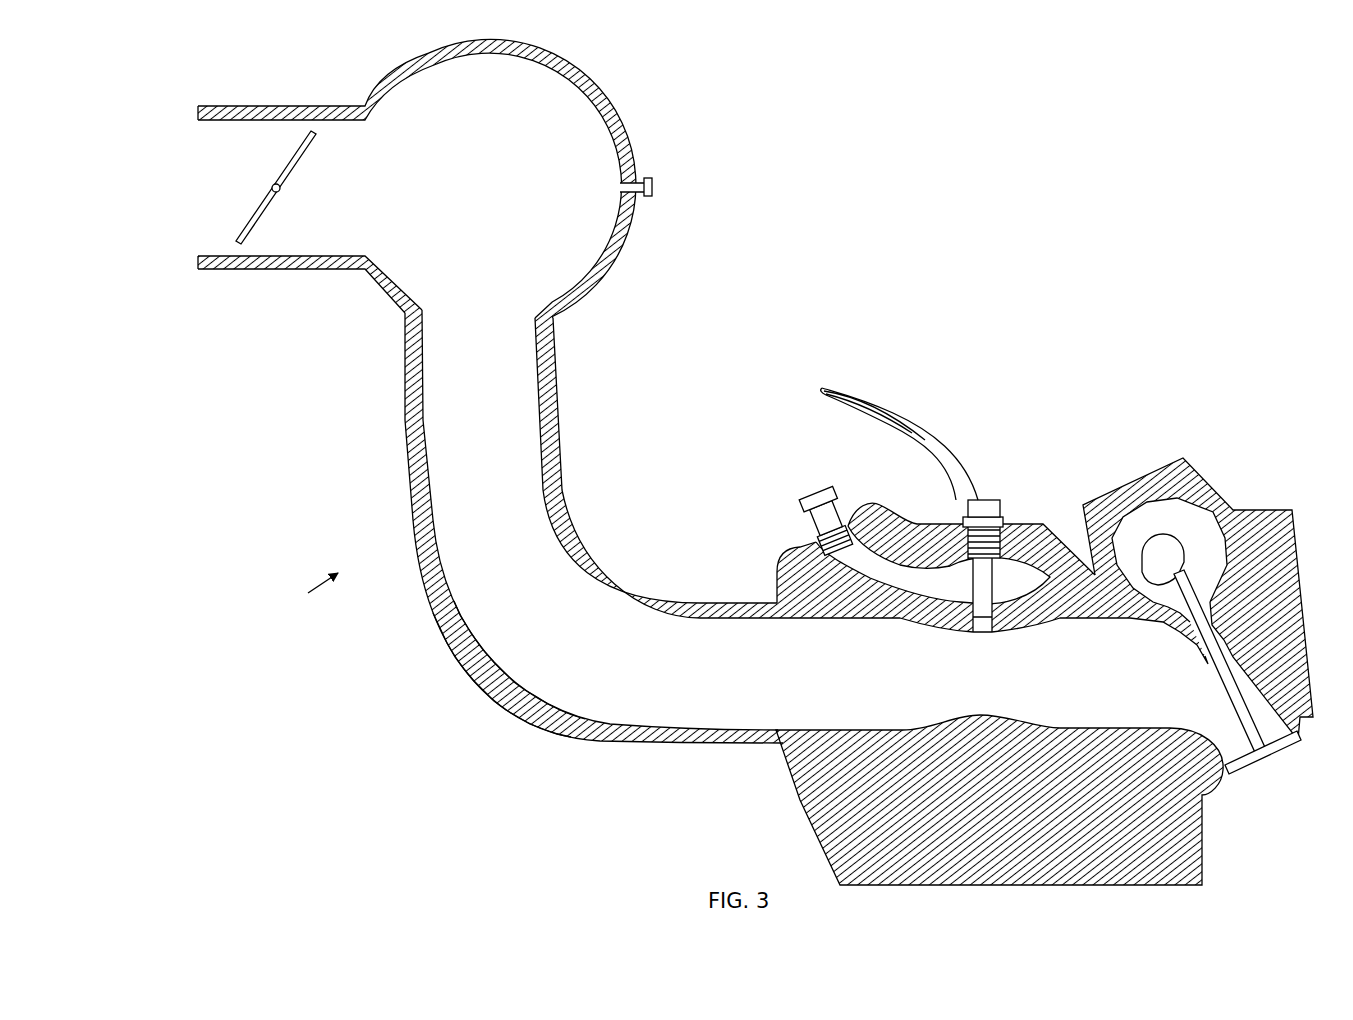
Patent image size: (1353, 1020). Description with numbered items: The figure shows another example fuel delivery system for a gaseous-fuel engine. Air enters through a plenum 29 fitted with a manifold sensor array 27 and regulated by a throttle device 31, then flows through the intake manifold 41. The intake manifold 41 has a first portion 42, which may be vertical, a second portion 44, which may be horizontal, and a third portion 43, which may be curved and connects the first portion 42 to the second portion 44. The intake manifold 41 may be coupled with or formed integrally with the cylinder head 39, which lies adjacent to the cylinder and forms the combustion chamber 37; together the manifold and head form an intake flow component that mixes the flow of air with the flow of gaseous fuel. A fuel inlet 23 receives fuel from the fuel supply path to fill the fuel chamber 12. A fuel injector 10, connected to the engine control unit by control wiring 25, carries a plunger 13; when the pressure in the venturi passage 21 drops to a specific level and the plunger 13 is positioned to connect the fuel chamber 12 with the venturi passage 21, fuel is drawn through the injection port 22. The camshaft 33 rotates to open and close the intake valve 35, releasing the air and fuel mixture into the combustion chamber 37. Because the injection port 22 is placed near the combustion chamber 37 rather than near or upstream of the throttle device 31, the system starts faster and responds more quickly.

The fuel injector 10 is at (984, 508).
The fuel chamber 12 is at (965, 592).
The plunger 13 is at (993, 596).
The venturi passage 21 is at (947, 720).
The injection port 22 is at (980, 627).
The fuel inlet 23 is at (812, 495).
The control wiring 25 is at (918, 430).
The manifold sensor array 27 is at (654, 181).
The plenum 29 is at (377, 82).
The throttle device 31 is at (273, 187).
The camshaft 33 is at (1163, 553).
The intake valve 35 is at (1248, 757).
The combustion chamber 37 is at (1290, 834).
The cylinder head 39 is at (802, 803).
The intake manifold 41 is at (309, 592).
The first portion 42 is at (405, 410).
The third portion 43 is at (498, 697).
The second portion 44 is at (675, 610).